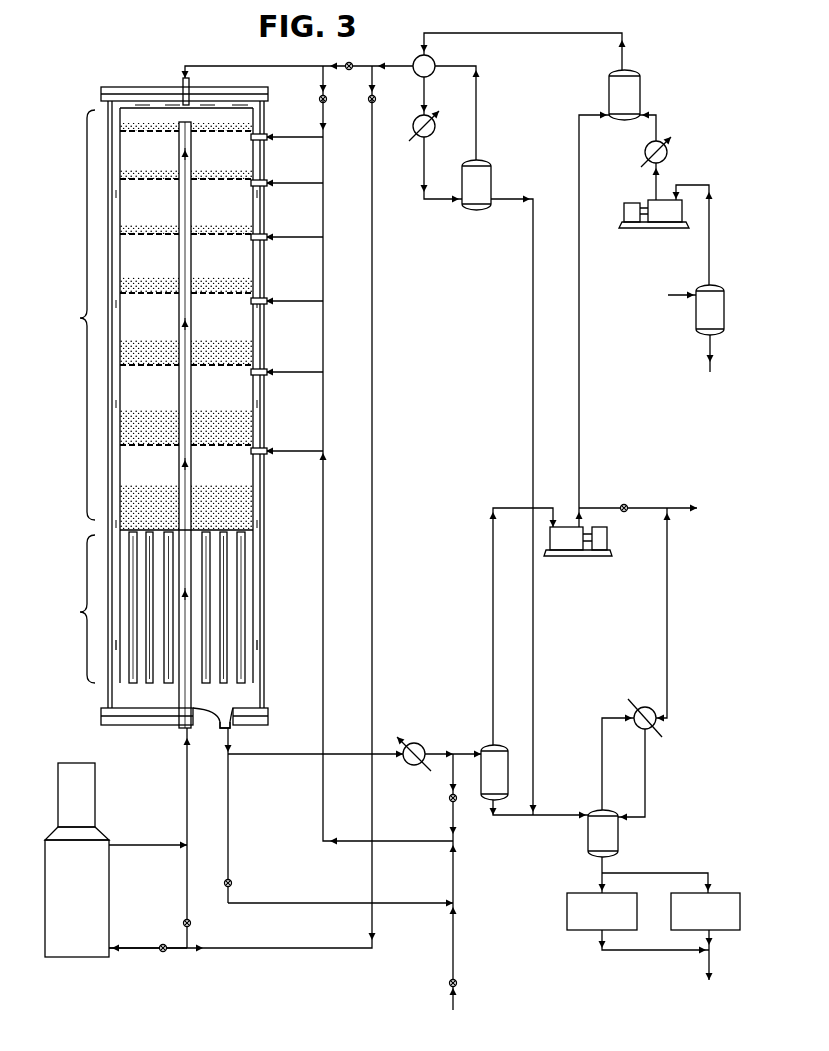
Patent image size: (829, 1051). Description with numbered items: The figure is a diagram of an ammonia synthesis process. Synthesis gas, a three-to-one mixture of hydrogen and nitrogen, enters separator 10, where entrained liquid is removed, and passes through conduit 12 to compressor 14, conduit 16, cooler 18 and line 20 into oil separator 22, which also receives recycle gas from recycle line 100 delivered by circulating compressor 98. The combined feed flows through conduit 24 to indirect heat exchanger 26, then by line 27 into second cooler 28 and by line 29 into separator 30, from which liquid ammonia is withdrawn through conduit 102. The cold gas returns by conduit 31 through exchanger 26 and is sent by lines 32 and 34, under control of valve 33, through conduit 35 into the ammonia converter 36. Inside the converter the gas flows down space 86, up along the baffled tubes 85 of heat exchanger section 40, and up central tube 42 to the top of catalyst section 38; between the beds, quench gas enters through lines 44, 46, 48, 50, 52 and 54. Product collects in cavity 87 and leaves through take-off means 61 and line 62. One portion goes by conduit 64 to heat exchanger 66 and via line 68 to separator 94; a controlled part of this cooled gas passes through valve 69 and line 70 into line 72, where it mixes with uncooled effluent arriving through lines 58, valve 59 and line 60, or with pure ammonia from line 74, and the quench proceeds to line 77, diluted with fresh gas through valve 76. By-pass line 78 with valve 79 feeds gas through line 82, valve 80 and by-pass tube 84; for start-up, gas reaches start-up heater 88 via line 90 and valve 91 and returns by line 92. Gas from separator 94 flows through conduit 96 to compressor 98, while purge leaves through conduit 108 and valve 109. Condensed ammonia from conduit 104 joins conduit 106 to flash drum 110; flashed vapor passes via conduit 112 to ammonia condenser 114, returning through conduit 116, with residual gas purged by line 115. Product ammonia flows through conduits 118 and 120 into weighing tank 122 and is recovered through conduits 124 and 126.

The separator 10 is at (724, 310).
The conduit 12 is at (711, 238).
The compressor 14 is at (665, 222).
The conduit 16 is at (655, 182).
The cooler 18 is at (667, 152).
The line 20 is at (658, 115).
The oil separator 22 is at (638, 88).
The conduit 24 is at (556, 29).
The indirect heat exchanger 26 is at (432, 58).
The transfer line 27 is at (424, 88).
The second cooler 28 is at (432, 136).
The cooled gas line 29 is at (424, 181).
The separator 30 is at (492, 170).
The conduit 31 is at (477, 113).
The line 32 is at (372, 66).
The valve 33 is at (345, 63).
The feed conduit 34 is at (218, 66).
The conduit 35 is at (183, 88).
The ammonia converter 36 is at (128, 86).
The catalyst section 38 is at (80, 318).
The heat exchanger section 40 is at (80, 612).
The central tube 42 is at (179, 267).
The quench gas line 44 is at (298, 136).
The quench gas line 46 is at (294, 182).
The quench gas line 48 is at (298, 236).
The quench gas line 50 is at (300, 294).
The quench gas line 52 is at (300, 364).
The quench gas line 54 is at (300, 443).
The line 58 is at (310, 905).
The valve 59 is at (232, 884).
The line 60 is at (455, 872).
The take-off means 61 is at (232, 727).
The product gas line 62 is at (228, 740).
The conduit 64 is at (280, 756).
The heat exchanger 66 is at (418, 742).
The line to separator 68 is at (463, 752).
The valve 69 is at (450, 797).
The line 70 is at (453, 822).
The line 72 is at (404, 843).
The line 74 is at (457, 984).
The valve 76 is at (326, 102).
The line 77 is at (323, 82).
The by-pass line 78 is at (373, 390).
The valve 79 is at (375, 102).
The valve 80 is at (185, 922).
The line 82 is at (187, 886).
The by-pass tube 84 is at (184, 732).
The baffled tubes 85 is at (208, 583).
The space 86 is at (115, 532).
The cavity 87 is at (250, 698).
The start-up heater 88 is at (81, 962).
The line 90 is at (141, 950).
The valve 91 is at (165, 952).
The line 92 is at (144, 845).
The separator 94 is at (497, 748).
The conduit 96 is at (492, 612).
The circulating compressor 98 is at (578, 555).
The recycle line 100 is at (580, 390).
The conduit 102 is at (530, 389).
The conduit 104 is at (504, 818).
The conduit 106 is at (560, 818).
The purge conduit 108 is at (645, 508).
The valve 109 is at (620, 506).
The flash drum 110 is at (615, 836).
The conduit 112 is at (601, 766).
The ammonia condenser 114 is at (645, 707).
The line 115 is at (668, 627).
The conduit 116 is at (646, 765).
The conduit 118 is at (600, 866).
The conduit 120 is at (603, 883).
The weighing tank 122 is at (617, 920).
The conduit 124 is at (646, 952).
The conduit 126 is at (711, 965).